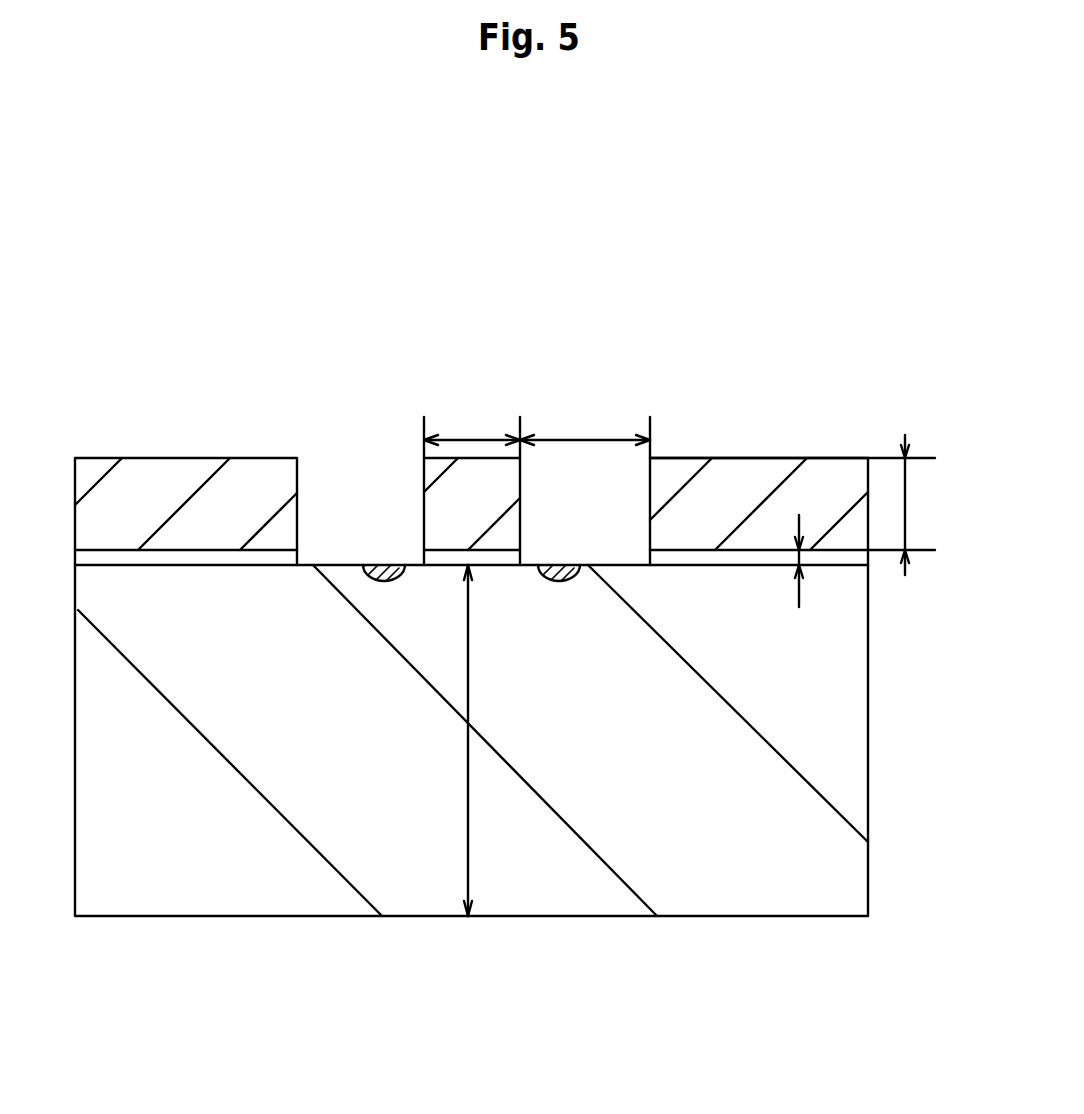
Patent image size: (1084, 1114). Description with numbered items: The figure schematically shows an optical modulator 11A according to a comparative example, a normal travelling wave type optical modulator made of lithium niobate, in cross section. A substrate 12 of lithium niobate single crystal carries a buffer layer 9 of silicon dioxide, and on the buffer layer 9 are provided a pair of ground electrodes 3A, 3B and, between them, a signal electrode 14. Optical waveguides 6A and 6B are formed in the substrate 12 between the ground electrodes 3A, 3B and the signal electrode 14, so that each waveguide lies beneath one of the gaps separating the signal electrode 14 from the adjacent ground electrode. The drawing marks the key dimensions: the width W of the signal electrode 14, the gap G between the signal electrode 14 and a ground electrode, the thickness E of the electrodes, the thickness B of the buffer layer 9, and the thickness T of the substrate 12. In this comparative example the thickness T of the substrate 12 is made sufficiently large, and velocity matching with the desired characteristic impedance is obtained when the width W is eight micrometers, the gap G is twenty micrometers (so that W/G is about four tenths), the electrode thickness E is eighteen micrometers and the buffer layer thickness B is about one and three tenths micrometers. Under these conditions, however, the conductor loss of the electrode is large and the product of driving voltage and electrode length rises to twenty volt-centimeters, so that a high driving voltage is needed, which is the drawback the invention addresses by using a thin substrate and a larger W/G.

The ground electrode 3A is at (140, 473).
The ground electrode 3B is at (790, 463).
The signal electrode 14 is at (443, 488).
The optical waveguide 6A is at (377, 582).
The optical waveguide 6B is at (560, 582).
The buffer layer 9 is at (868, 560).
The optical modulator 11A is at (878, 448).
The substrate 12 is at (840, 780).
The width of the signal electrode W is at (472, 440).
The gap G is at (592, 440).
The thickness of the electrode E is at (905, 508).
The thickness of the buffer layer B is at (803, 553).
The thickness of the substrate T is at (468, 817).